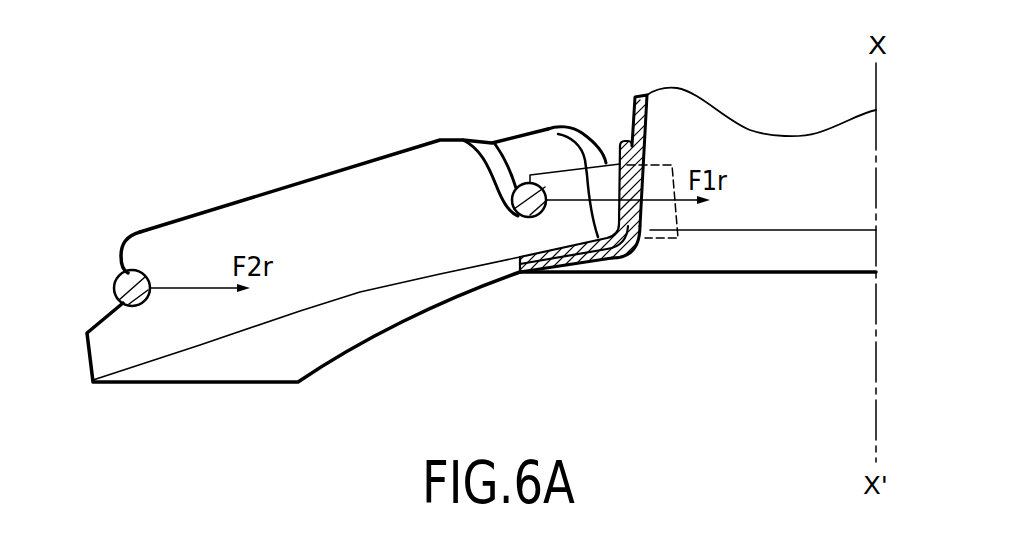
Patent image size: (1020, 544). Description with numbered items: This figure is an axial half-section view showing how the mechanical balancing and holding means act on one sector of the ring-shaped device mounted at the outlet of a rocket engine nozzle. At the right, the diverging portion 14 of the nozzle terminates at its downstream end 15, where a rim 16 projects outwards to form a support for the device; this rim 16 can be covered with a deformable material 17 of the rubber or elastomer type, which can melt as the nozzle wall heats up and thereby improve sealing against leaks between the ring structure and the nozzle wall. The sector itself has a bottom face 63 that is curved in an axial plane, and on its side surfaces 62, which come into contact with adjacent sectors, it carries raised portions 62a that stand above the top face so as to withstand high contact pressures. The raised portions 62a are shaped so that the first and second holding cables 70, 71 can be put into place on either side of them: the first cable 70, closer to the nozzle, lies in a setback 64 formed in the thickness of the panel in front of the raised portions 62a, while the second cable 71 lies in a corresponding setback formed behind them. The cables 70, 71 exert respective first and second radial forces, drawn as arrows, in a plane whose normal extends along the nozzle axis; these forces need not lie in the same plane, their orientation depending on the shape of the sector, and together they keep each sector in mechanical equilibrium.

The diverging portion 14 is at (636, 97).
The downstream end 15 is at (647, 242).
The rim 16 is at (555, 270).
The deformable material 17 is at (618, 140).
The side surfaces 62 is at (337, 210).
The raised portions 62a is at (525, 140).
The bottom faces 63 is at (323, 333).
The setback 64 is at (509, 202).
The first holding cable 70 is at (517, 216).
The second holding cable 71 is at (117, 280).